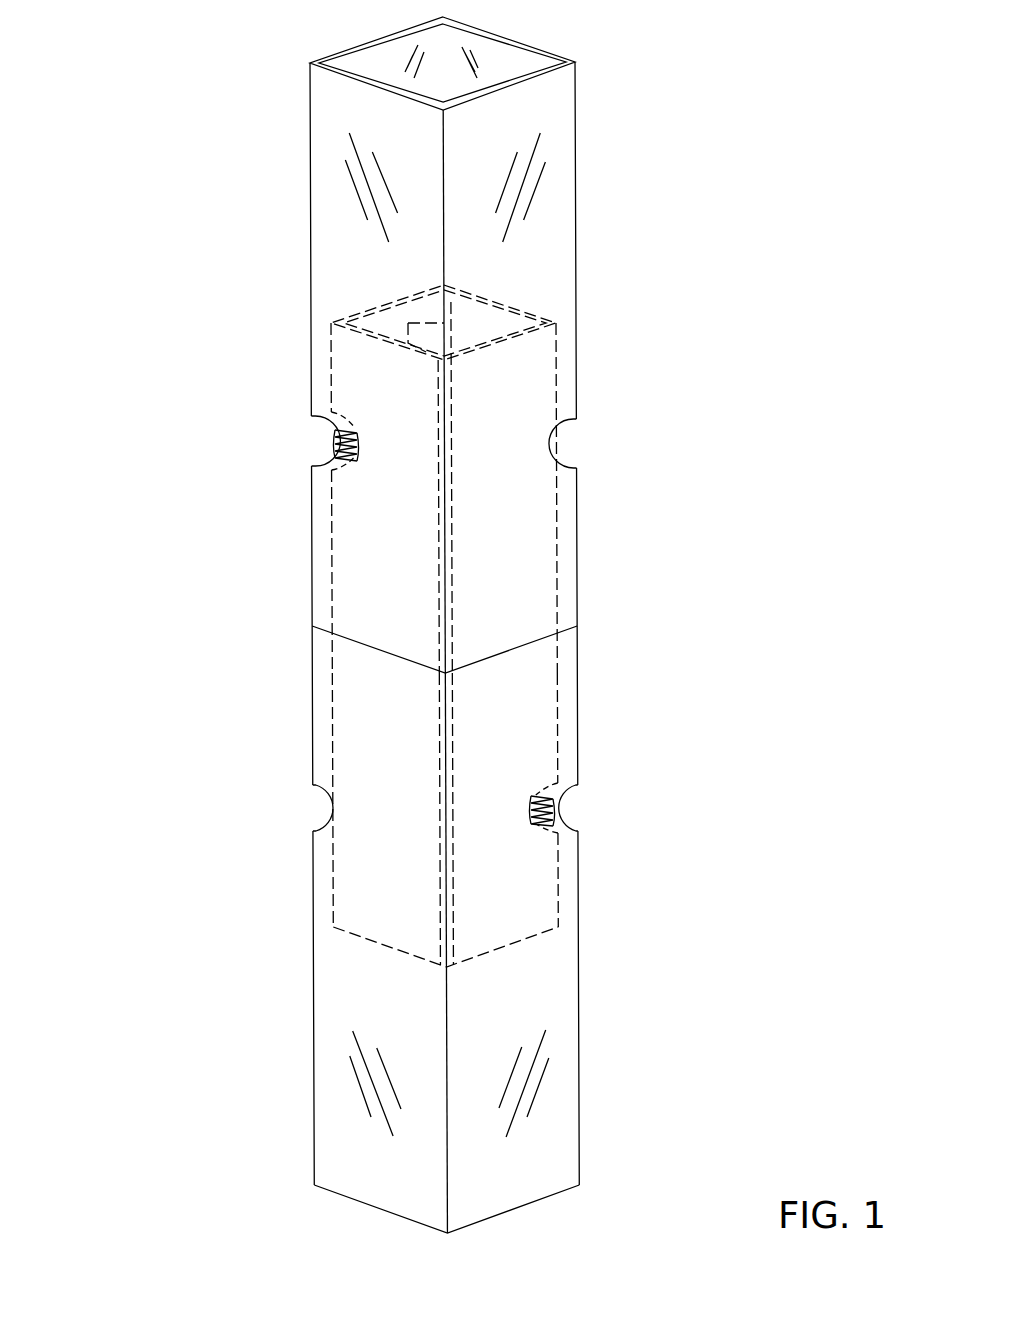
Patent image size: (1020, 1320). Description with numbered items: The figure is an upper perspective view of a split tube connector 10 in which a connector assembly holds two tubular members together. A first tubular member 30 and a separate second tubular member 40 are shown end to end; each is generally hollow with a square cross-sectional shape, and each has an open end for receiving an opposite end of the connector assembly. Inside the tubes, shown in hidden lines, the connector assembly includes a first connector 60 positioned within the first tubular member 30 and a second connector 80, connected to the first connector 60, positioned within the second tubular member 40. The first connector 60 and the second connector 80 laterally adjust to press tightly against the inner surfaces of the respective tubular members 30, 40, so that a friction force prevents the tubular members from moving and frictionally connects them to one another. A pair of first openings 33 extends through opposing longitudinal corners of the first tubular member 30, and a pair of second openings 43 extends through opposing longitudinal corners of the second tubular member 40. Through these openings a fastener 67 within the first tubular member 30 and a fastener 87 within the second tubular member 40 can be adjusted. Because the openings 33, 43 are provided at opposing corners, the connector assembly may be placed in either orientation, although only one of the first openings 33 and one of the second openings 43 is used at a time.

The split tube connector 10 is at (134, 70).
The first tubular member 30 is at (310, 277).
The first openings 33 is at (334, 458).
The second tubular member 40 is at (578, 1010).
The second openings 43 is at (326, 824).
The first connector 60 is at (345, 552).
The fastener 67 is at (322, 420).
The second connector 80 is at (540, 875).
The fastener 87 is at (565, 772).